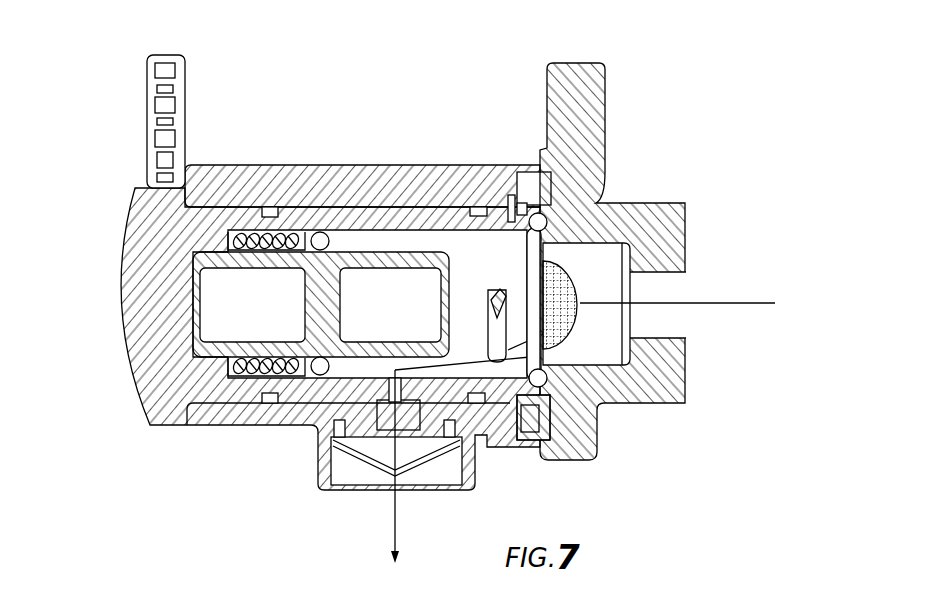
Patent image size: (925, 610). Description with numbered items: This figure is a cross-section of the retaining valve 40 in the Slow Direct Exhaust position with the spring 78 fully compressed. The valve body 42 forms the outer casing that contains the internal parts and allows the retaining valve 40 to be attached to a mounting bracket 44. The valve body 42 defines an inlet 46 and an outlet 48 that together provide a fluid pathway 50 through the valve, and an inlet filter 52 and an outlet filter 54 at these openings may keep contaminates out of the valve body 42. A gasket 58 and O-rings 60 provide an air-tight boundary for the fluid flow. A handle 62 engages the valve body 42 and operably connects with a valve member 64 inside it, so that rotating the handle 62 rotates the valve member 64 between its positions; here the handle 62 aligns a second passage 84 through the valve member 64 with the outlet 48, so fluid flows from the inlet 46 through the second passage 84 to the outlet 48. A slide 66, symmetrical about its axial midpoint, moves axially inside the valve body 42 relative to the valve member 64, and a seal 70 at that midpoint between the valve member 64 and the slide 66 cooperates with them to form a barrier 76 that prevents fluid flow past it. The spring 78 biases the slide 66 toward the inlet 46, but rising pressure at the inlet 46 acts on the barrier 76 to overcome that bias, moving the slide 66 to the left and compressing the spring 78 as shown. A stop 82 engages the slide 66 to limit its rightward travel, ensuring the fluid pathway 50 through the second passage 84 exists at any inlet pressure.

The retaining valve 40 is at (106, 114).
The valve body 42 is at (273, 427).
The mounting bracket 44 is at (603, 60).
The inlet 46 is at (533, 447).
The outlet 48 is at (377, 440).
The fluid pathway 50 is at (741, 302).
The inlet filter 52 is at (570, 270).
The outlet filter 54 is at (420, 437).
The gasket 58 is at (552, 415).
The O-rings 60 is at (272, 207).
The handle 62 is at (147, 82).
The valve member 64 is at (247, 407).
The slide 66 is at (427, 252).
The seal 70 is at (319, 232).
The barrier 76 is at (340, 242).
The spring 78 is at (238, 232).
The stop 82 is at (493, 295).
The second passage 84 is at (390, 405).